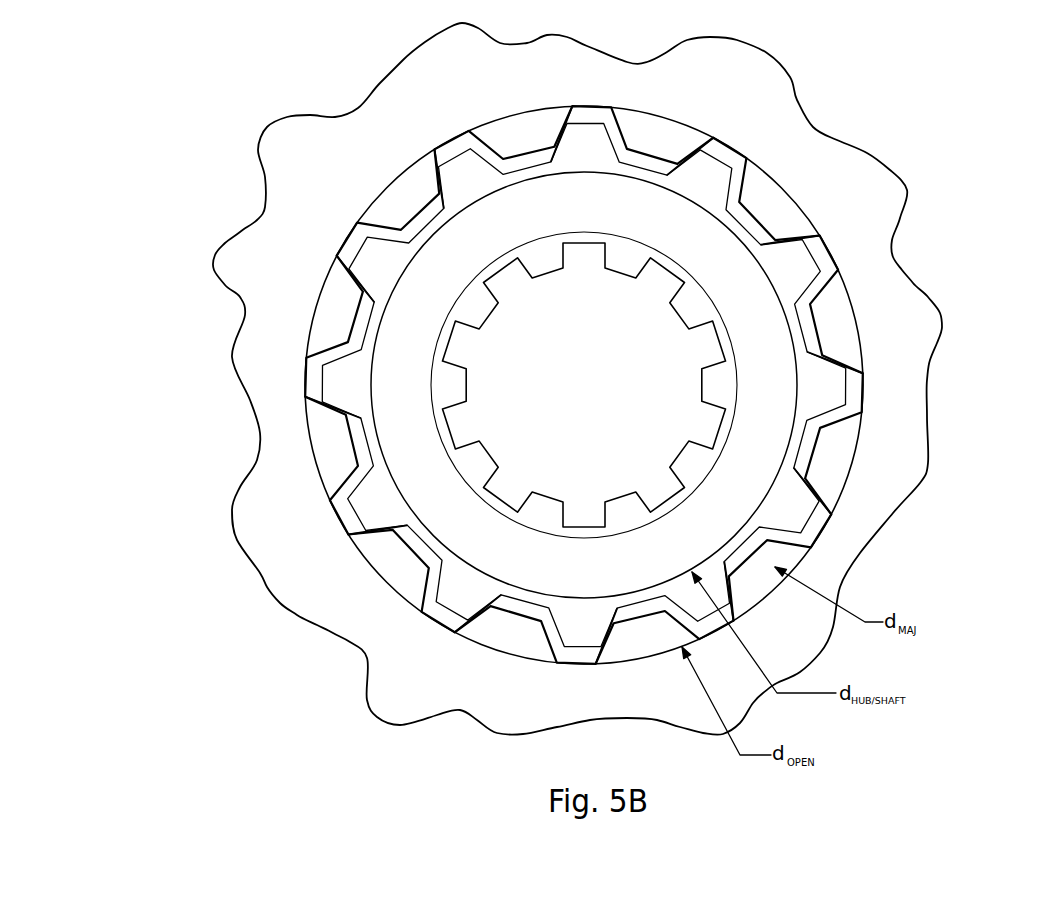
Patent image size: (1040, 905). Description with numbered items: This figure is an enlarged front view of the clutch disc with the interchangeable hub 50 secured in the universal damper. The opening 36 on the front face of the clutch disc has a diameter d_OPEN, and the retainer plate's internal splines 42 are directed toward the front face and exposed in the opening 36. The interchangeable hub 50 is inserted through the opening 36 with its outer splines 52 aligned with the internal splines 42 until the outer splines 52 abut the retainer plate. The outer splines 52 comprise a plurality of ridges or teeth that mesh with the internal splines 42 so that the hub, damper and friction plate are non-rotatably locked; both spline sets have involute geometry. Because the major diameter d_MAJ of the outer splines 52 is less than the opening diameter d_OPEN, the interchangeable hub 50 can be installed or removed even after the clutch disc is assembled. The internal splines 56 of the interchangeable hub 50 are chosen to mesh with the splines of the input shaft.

The opening 36 is at (492, 633).
The interchangeable hub 50 is at (827, 380).
The internal splines 42 is at (352, 487).
The outer splines 52 is at (373, 510).
The internal splines 56 is at (475, 468).